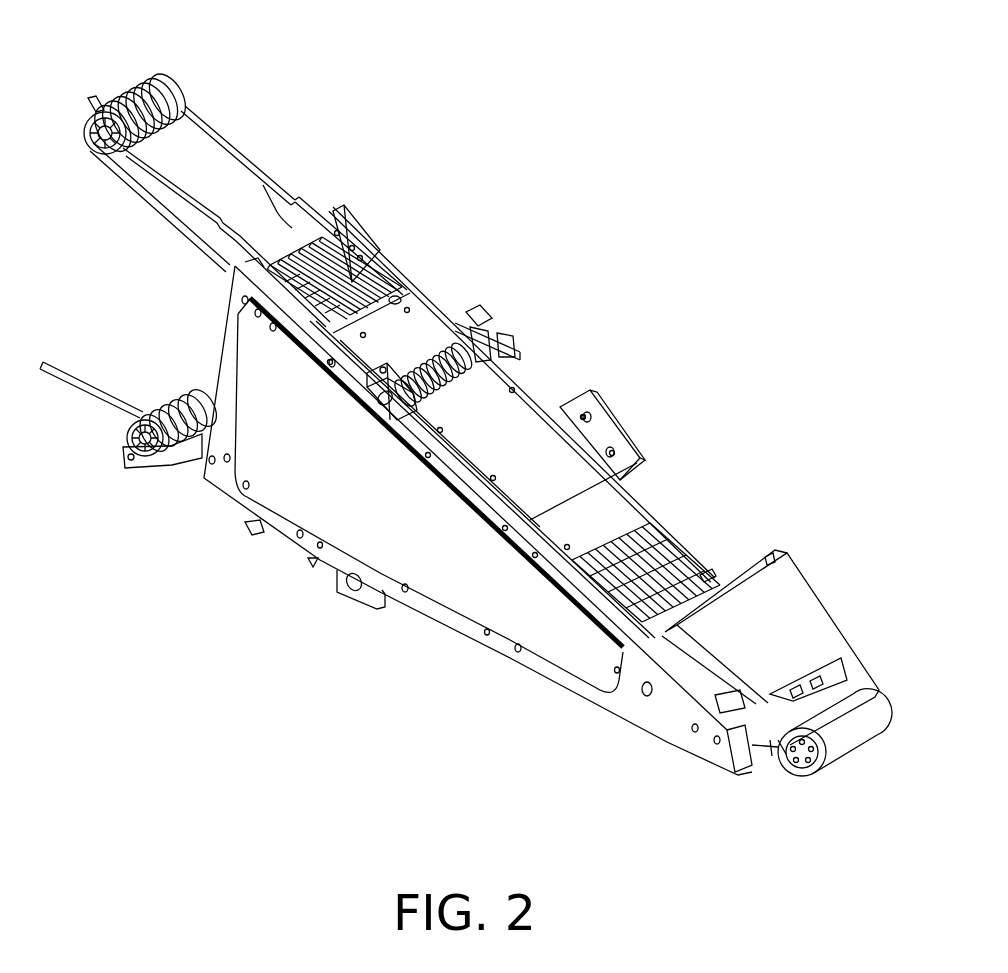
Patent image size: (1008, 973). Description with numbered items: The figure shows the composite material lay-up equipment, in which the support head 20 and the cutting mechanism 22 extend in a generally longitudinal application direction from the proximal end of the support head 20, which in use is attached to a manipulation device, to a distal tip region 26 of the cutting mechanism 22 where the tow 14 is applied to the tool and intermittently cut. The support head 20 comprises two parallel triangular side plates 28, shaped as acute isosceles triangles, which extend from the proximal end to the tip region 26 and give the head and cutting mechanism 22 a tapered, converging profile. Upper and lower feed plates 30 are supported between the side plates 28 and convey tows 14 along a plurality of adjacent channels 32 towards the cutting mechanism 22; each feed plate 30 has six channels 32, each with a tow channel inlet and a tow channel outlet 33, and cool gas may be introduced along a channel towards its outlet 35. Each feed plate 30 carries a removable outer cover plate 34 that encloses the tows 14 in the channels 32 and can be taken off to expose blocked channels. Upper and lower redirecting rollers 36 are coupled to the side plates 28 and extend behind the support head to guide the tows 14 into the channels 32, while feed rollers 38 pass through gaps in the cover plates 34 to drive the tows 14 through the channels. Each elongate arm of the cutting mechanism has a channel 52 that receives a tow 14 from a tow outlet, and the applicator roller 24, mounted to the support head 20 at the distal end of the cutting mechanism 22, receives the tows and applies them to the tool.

The tow 14 is at (215, 213).
The support head 20 is at (430, 327).
The cutting mechanism 22 is at (684, 556).
The applicator roller 24 is at (840, 737).
The tip region 26 is at (680, 707).
The side plates 28 is at (660, 688).
The feed plates 30 is at (397, 283).
The channels 32 is at (358, 258).
The tow channel outlet 33 is at (343, 232).
The cover plate 34 is at (523, 457).
The outlet 35 is at (657, 513).
The redirecting rollers 36 is at (167, 80).
The feed rollers 38 is at (483, 320).
The channel 52 is at (710, 577).